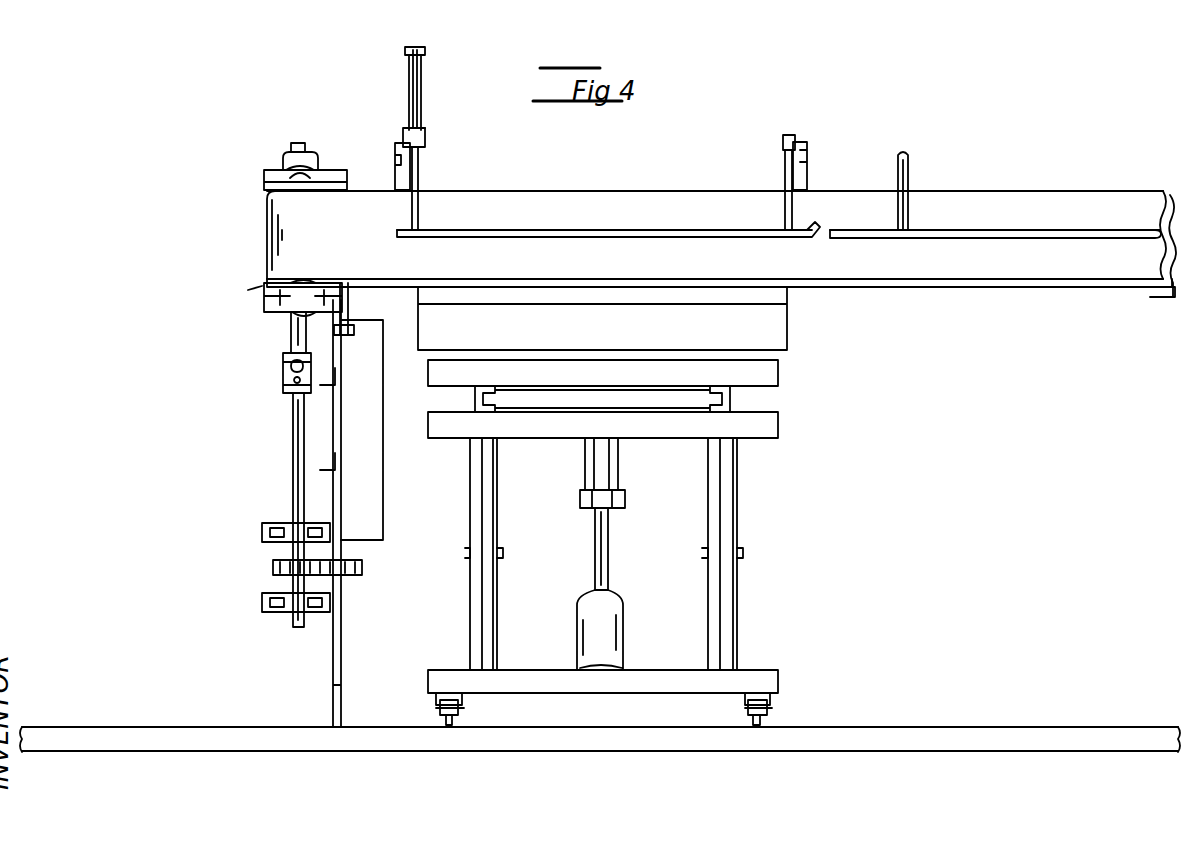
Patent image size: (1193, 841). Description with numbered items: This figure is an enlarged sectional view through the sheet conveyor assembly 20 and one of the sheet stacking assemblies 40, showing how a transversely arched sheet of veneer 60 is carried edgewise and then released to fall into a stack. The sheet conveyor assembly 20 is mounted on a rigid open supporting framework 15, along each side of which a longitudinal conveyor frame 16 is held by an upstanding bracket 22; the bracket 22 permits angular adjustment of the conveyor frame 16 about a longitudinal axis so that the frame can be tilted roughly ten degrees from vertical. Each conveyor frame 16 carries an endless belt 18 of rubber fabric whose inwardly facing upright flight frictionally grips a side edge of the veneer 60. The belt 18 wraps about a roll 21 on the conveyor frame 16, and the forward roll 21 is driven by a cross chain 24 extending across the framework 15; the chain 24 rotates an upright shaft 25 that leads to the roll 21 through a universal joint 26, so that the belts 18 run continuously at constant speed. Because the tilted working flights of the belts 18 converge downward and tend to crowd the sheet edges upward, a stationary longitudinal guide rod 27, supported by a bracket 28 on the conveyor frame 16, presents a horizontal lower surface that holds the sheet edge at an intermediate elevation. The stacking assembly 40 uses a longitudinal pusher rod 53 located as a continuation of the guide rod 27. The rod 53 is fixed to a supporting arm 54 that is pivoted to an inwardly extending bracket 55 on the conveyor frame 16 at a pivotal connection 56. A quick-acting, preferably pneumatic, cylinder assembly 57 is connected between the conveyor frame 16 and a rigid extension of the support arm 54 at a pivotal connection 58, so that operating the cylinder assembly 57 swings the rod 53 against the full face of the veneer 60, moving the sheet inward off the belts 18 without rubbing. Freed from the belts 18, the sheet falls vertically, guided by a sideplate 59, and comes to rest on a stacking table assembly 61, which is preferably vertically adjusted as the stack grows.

The supporting framework 15 is at (342, 635).
The conveyor frame 16 is at (1154, 287).
The endless belt 18 is at (362, 254).
The sheet conveyor assembly 20 is at (1036, 177).
The roll 21 is at (262, 292).
The upstanding bracket 22 is at (348, 302).
The cross chain 24 is at (272, 578).
The upright shaft 25 is at (292, 438).
The universal joint 26 is at (283, 368).
The guide rod 27 is at (872, 228).
The bracket 28 is at (906, 159).
The sheet stacking assembly 40 is at (595, 209).
The pusher rod 53 is at (621, 229).
The supporting arm 54 is at (420, 175).
The bracket 55 is at (396, 176).
The pivotal connection 56 is at (424, 148).
The cylinder assembly 57 is at (420, 132).
The pivotal connection 58 is at (430, 57).
The sideplate 59 is at (780, 325).
The veneer sheet 60 is at (775, 362).
The stacking table assembly 61 is at (810, 393).